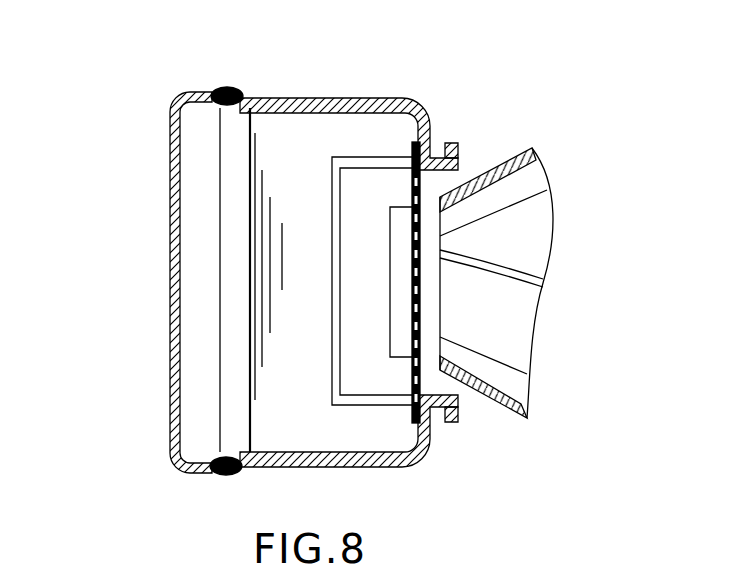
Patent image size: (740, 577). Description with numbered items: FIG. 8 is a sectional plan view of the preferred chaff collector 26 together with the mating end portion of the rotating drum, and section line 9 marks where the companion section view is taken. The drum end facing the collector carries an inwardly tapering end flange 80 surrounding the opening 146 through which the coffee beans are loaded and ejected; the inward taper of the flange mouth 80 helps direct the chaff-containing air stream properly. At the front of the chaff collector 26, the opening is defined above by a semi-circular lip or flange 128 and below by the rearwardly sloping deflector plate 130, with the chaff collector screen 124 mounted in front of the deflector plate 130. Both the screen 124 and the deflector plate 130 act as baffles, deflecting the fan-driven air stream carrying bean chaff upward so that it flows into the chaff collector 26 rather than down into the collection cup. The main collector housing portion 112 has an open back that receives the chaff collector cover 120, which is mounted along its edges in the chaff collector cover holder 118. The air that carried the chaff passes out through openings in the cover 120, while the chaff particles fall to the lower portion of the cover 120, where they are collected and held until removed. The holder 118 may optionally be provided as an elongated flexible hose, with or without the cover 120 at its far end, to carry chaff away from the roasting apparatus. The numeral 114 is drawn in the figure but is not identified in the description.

The collector housing portion 112 is at (362, 98).
The chaff collector cover 120 is at (180, 94).
The chaff collector cover holder 118 is at (228, 88).
The deflector plate 130 is at (332, 220).
The chaff collector screen 124 is at (412, 418).
The semi-circular lip or flange 128 is at (448, 143).
The horn 114 is at (497, 203).
The opening 146 is at (443, 350).
The inwardly tapering end flange 80 is at (530, 420).
The chaff collector 26 is at (207, 493).
The section line 9- 9 is at (100, 285).